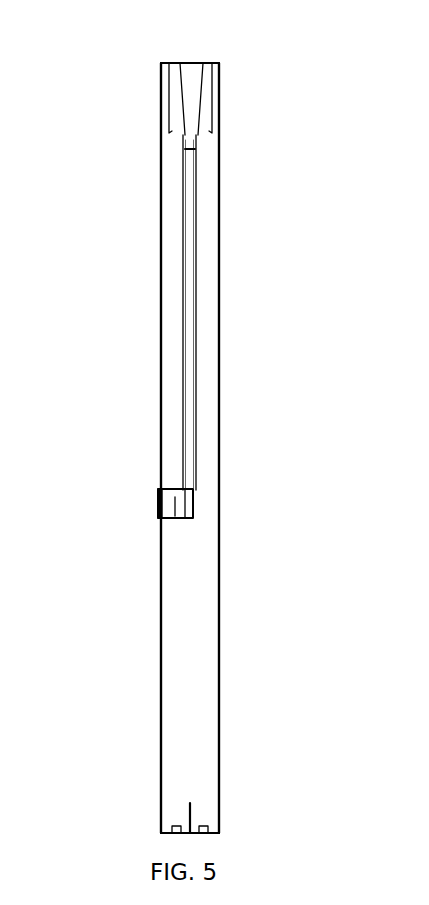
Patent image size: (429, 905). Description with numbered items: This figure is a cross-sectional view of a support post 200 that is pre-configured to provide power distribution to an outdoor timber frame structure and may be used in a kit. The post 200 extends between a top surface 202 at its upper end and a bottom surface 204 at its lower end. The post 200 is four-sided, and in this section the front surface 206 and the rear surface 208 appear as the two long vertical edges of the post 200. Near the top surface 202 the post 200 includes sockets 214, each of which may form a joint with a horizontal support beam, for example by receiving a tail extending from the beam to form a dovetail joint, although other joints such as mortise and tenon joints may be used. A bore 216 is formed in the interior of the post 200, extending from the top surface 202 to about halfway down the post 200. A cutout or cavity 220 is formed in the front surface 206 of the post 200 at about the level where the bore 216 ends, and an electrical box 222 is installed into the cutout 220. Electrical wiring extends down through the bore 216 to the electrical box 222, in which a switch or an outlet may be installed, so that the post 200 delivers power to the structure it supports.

The post 200 is at (228, 223).
The top surface 202 is at (212, 62).
The bottom surface 204 is at (219, 833).
The front surface 206 is at (161, 402).
The rear surface 208 is at (220, 407).
The sockets 214 is at (220, 97).
The bore 216 is at (196, 332).
The cutout 220 is at (195, 503).
The electrical box 222 is at (175, 507).